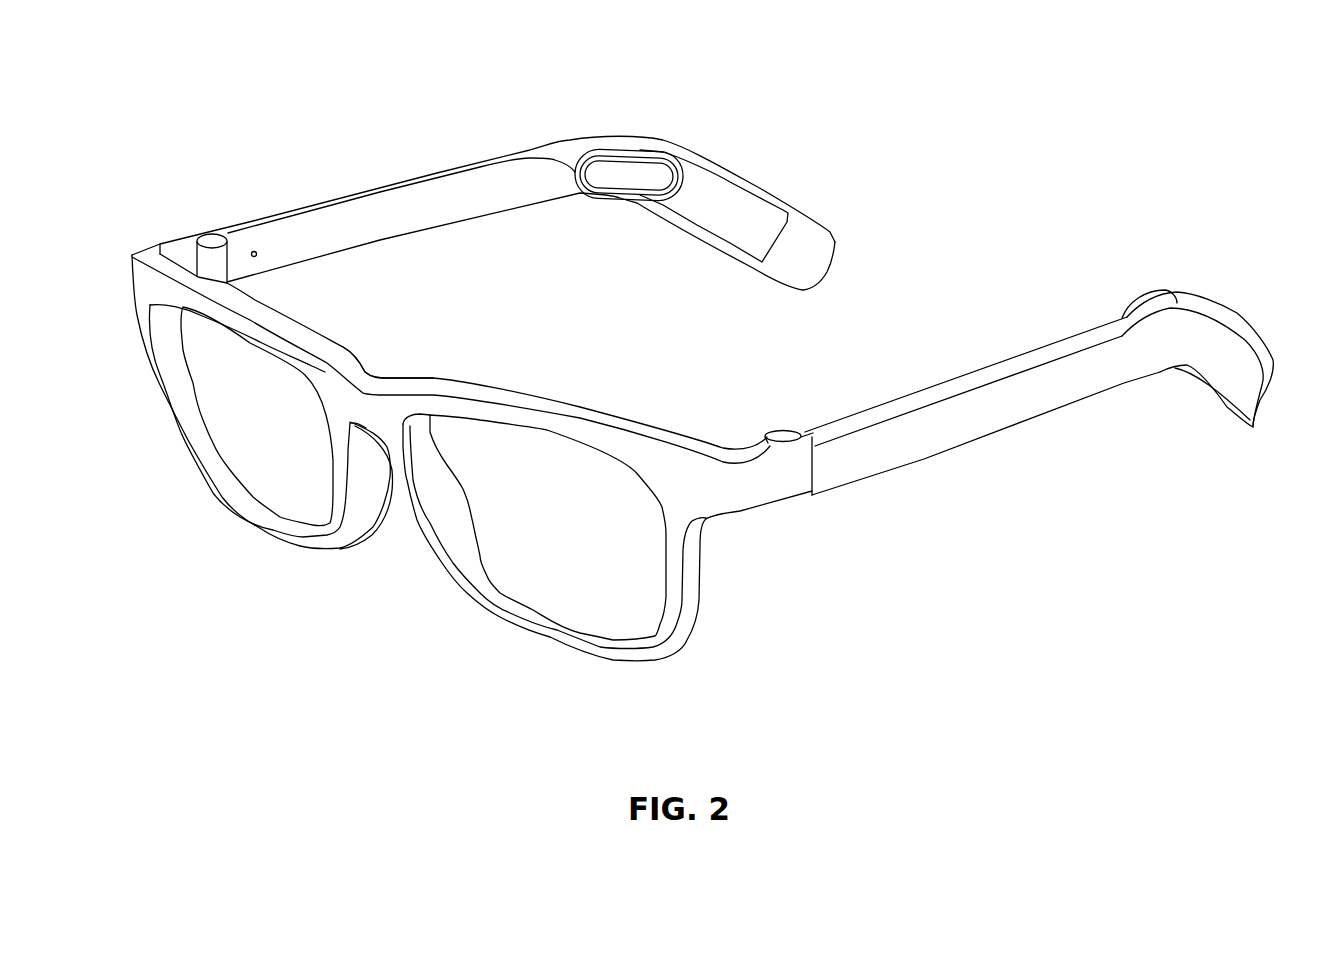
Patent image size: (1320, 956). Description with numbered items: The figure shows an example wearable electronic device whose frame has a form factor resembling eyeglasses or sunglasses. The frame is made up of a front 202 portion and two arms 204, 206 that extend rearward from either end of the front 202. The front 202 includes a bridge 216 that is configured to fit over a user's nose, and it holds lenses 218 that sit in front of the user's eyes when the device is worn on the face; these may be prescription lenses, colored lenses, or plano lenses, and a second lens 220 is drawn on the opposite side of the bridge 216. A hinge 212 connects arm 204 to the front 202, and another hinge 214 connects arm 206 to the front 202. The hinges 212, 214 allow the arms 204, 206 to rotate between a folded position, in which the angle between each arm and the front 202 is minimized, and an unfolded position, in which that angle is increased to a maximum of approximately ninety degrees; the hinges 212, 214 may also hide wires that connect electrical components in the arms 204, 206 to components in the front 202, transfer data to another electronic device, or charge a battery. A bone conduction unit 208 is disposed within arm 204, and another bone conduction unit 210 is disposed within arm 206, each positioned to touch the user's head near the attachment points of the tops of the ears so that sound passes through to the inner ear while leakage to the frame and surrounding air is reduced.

The front 202 is at (556, 430).
The arm 204 is at (432, 205).
The arm 206 is at (979, 407).
The bone conduction unit 208 is at (623, 181).
The bone conduction unit 210 is at (1136, 298).
The hinge 212 is at (210, 246).
The hinge 214 is at (783, 434).
The bridge 216 is at (362, 412).
The lenses 218 is at (268, 468).
The right lens 220 is at (558, 587).